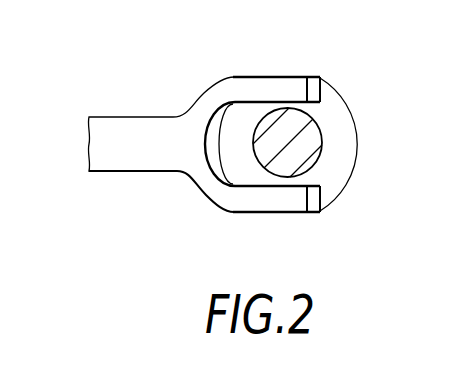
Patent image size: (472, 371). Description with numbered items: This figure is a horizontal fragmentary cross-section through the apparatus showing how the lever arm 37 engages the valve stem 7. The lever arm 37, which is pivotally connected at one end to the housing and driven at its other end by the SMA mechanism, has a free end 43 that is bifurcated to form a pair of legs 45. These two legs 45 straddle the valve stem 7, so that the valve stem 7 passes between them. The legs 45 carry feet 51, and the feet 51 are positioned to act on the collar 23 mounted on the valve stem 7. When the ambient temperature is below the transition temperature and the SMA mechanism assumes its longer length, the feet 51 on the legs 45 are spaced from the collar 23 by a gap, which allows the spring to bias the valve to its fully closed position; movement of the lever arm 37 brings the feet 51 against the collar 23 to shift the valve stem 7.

The lever arm 37 is at (137, 127).
The free end 43 is at (192, 98).
The collar 23 is at (352, 117).
The legs 45 is at (252, 77).
The feet 51 is at (315, 83).
The valve stem 7 is at (307, 140).